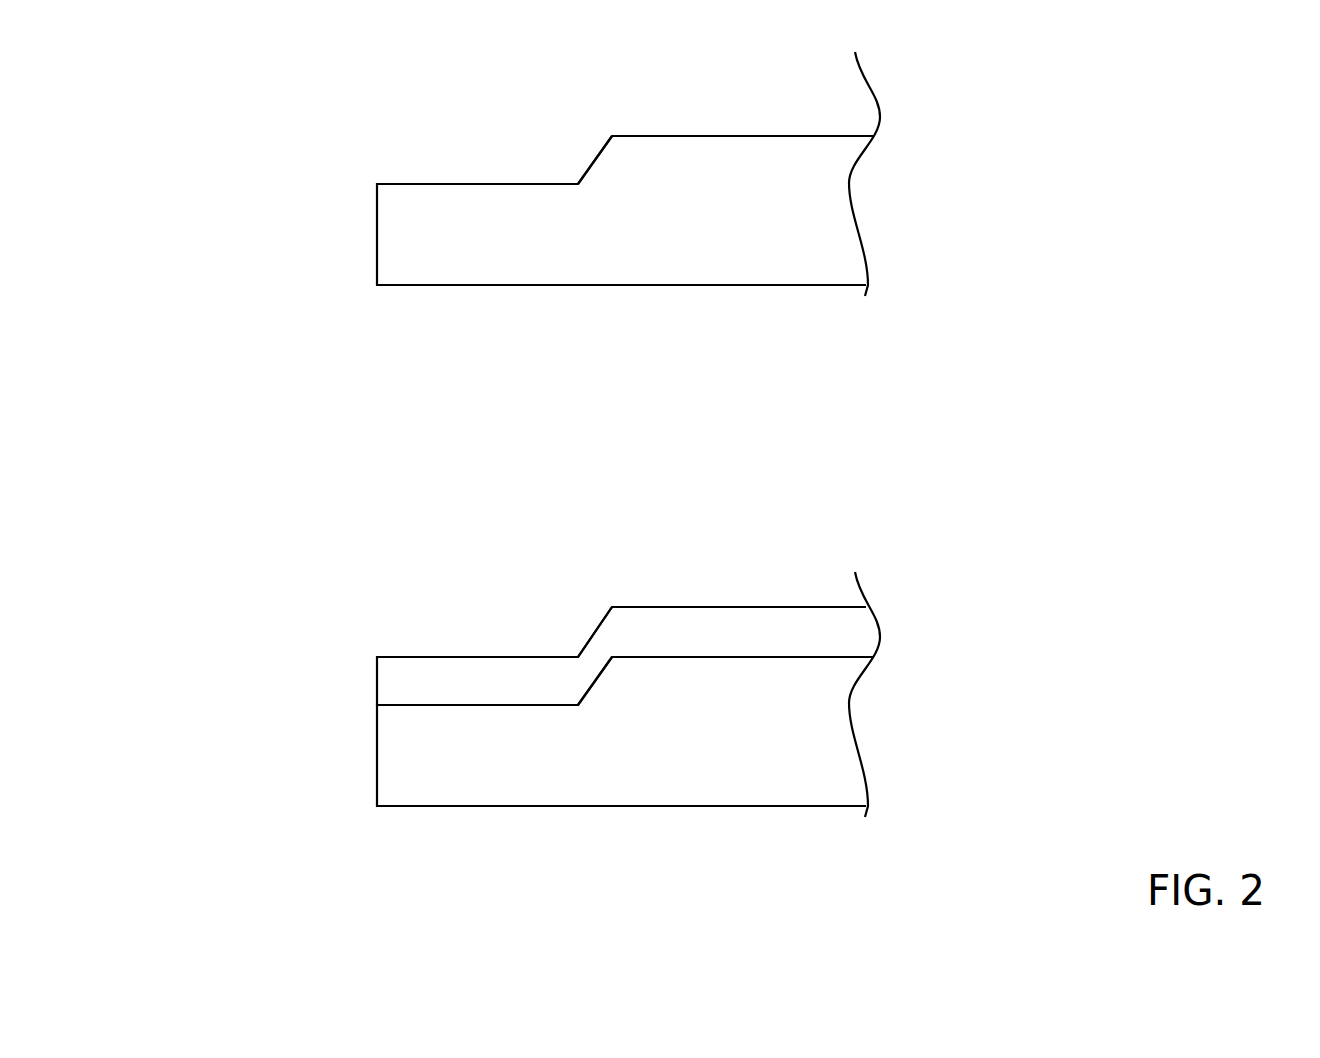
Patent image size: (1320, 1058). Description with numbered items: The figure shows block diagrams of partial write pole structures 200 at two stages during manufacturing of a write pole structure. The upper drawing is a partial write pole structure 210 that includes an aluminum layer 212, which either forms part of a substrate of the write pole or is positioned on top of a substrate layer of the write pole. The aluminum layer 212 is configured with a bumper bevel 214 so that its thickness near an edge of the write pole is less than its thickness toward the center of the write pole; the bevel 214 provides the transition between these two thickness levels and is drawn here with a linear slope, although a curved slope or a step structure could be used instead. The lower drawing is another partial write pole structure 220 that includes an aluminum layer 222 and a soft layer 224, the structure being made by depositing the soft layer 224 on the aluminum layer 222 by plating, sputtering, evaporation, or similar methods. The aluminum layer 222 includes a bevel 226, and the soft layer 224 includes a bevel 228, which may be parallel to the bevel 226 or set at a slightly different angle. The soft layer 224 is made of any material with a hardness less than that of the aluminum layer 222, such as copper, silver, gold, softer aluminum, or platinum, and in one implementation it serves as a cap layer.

The partial write pole structures 200 is at (150, 103).
The partial write pole structure 210 is at (158, 240).
The aluminum layer 212 is at (377, 262).
The bumper bevel 214 is at (601, 152).
The partial write pole structure 220 is at (191, 743).
The aluminum layer 222 is at (377, 766).
The soft layer 224 is at (377, 676).
The bevel 226 is at (600, 676).
The bevel 228 is at (591, 638).